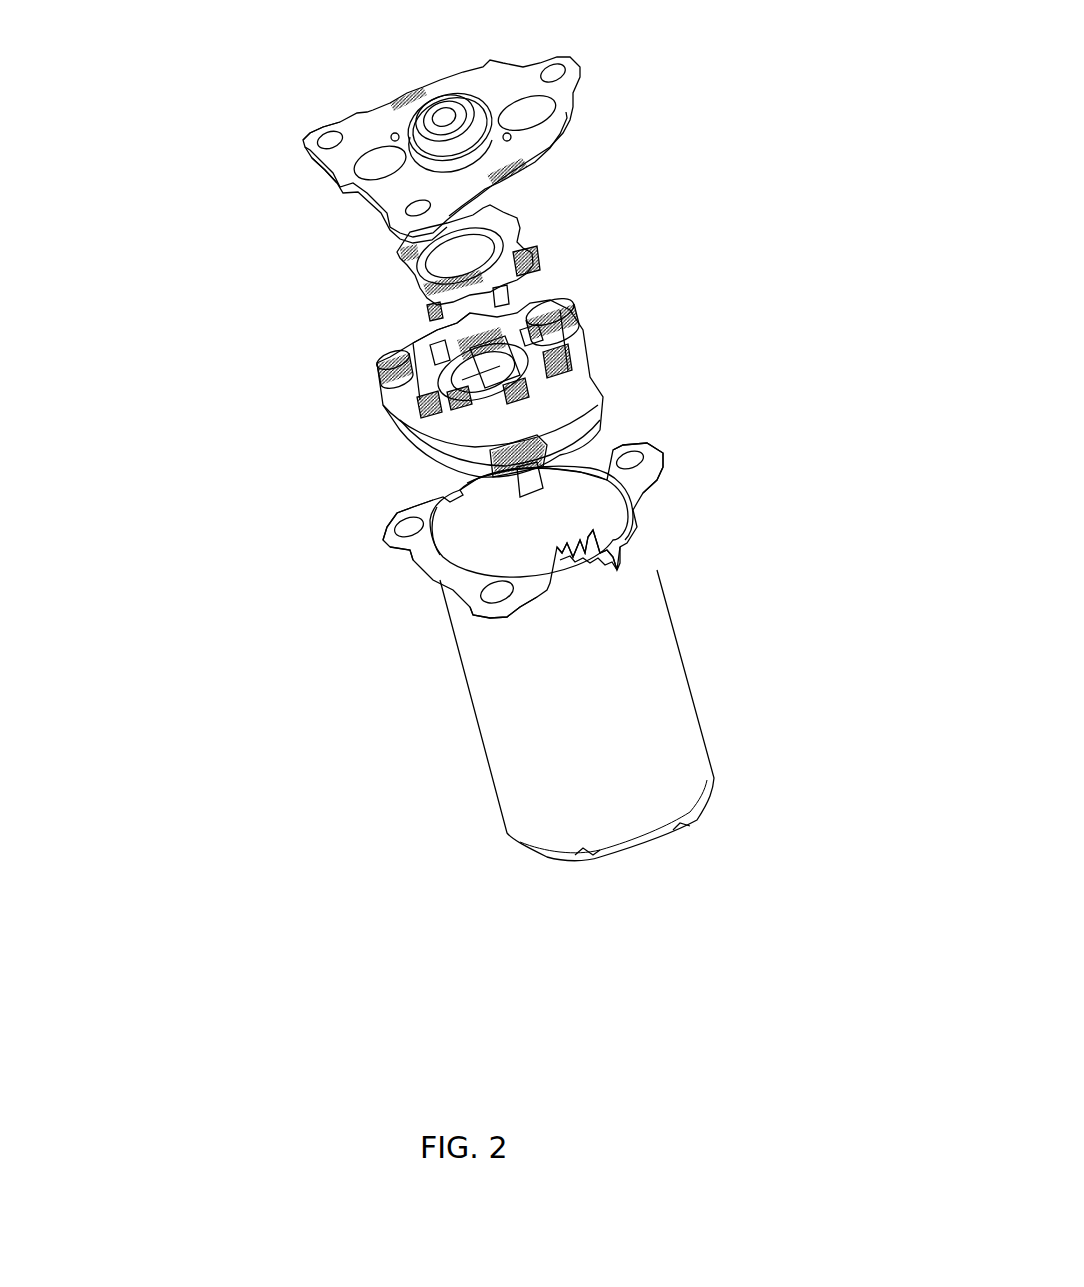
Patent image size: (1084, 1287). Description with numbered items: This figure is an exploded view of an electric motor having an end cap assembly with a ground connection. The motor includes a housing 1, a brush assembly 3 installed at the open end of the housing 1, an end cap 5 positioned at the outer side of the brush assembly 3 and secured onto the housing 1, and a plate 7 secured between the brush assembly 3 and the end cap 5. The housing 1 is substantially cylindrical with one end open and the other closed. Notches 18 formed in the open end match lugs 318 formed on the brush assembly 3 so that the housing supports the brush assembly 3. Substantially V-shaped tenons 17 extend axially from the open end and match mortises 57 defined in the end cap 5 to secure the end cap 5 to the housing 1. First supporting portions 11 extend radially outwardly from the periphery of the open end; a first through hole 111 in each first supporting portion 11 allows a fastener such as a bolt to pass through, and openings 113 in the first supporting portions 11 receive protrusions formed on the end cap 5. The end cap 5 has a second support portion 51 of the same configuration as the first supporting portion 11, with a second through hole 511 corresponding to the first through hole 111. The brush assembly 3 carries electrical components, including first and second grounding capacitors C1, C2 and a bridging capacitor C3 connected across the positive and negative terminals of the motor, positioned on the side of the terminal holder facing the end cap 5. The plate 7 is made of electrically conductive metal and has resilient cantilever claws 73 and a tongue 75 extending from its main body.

The housing 1 is at (603, 610).
The first supporting portion 11 is at (643, 480).
The first through hole 111 is at (605, 452).
The opening 113 is at (415, 555).
The tenon 17 is at (550, 588).
The notch 18 is at (622, 549).
The brush assembly 3 is at (580, 403).
The lug 318 is at (573, 395).
The first grounding capacitor C1 is at (420, 417).
The second grounding capacitor C2 is at (582, 360).
The bridging capacitor C3 is at (378, 358).
The end cap 5 is at (514, 146).
The second support portion 51 is at (303, 140).
The second through hole 511 is at (318, 145).
The mortise 57 is at (395, 93).
The plate 7 is at (533, 252).
The claw 73 is at (437, 303).
The tongue 75 is at (497, 210).